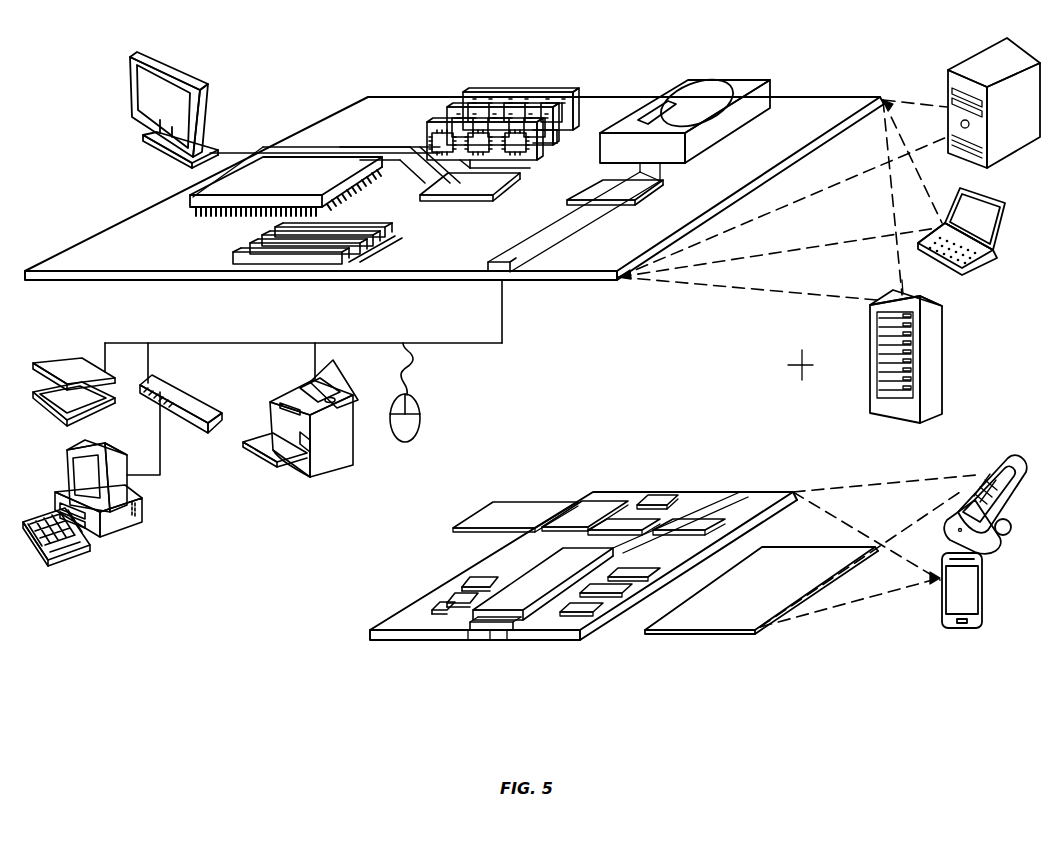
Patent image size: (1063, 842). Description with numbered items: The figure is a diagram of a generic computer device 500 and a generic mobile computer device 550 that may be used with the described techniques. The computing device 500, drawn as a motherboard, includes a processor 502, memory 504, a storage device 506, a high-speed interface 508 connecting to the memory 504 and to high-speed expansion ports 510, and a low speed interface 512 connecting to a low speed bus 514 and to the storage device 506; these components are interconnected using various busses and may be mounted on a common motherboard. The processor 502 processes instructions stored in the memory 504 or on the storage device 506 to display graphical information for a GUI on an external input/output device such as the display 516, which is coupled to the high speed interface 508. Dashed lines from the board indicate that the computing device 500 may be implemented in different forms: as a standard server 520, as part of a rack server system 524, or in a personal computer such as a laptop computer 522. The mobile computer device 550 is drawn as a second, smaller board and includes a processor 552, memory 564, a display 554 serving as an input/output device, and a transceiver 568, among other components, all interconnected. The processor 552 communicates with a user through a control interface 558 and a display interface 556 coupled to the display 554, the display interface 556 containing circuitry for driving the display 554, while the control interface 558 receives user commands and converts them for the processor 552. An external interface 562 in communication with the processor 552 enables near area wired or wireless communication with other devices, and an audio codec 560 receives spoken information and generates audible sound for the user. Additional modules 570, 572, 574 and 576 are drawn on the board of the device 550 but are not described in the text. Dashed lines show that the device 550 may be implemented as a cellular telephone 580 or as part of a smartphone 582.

The computing device 500 is at (305, 74).
The processor 502 is at (197, 199).
The memory 504 is at (468, 91).
The storage device 506 is at (675, 81).
The high-speed interface 508 is at (430, 180).
The high-speed expansion ports 510 is at (243, 248).
The low speed interface 512 is at (600, 188).
The low speed bus 514 is at (513, 280).
The display 516 is at (130, 53).
The standard server 520 is at (948, 83).
The laptop computer 522 is at (1010, 215).
The rack server system 524 is at (870, 380).
The mobile computer device 550 is at (344, 639).
The processor 552 is at (520, 603).
The display 554 is at (723, 618).
The display interface 556 is at (585, 628).
The control interface 558 is at (613, 588).
The audio codec 560 is at (630, 573).
The external interface 562 is at (488, 630).
The memory 564 is at (458, 597).
The transceiver 568 is at (690, 520).
The module 570 is at (667, 489).
The module 572 is at (564, 501).
The module 574 is at (506, 502).
The module 576 is at (622, 523).
The cellular telephone 580 is at (990, 455).
The smartphone 582 is at (940, 606).